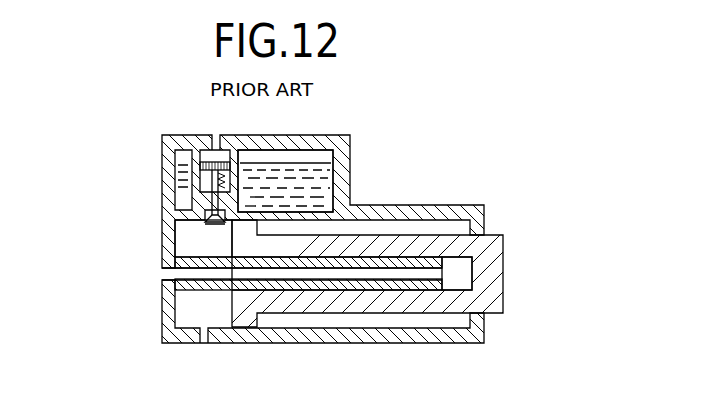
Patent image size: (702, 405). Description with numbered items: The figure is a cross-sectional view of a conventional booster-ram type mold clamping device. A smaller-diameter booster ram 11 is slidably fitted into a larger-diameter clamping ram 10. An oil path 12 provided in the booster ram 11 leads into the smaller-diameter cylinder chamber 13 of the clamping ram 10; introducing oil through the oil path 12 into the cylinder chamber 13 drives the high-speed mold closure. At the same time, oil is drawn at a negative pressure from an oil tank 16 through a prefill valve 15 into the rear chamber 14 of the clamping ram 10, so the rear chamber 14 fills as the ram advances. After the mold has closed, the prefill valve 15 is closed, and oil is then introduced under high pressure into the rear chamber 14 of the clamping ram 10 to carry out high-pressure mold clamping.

The clamping ram 10 is at (497, 257).
The booster ram 11 is at (360, 287).
The oil path 12 is at (170, 275).
The smaller-diameter cylinder chamber 13 is at (462, 280).
The rear chamber 14 is at (185, 242).
The prefill valve 15 is at (208, 208).
The oil tank 16 is at (325, 188).